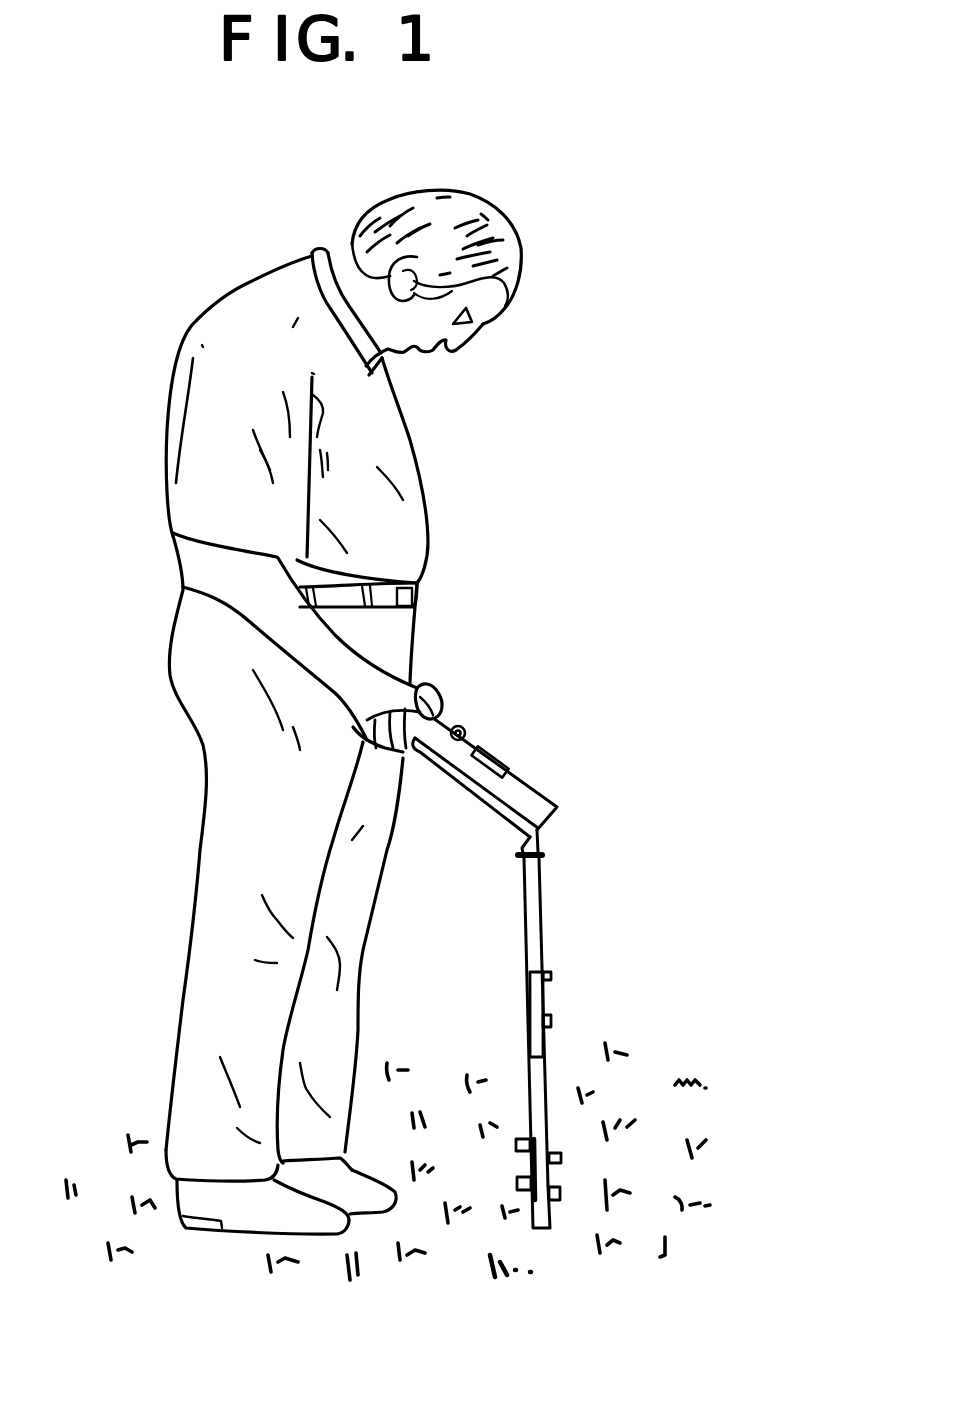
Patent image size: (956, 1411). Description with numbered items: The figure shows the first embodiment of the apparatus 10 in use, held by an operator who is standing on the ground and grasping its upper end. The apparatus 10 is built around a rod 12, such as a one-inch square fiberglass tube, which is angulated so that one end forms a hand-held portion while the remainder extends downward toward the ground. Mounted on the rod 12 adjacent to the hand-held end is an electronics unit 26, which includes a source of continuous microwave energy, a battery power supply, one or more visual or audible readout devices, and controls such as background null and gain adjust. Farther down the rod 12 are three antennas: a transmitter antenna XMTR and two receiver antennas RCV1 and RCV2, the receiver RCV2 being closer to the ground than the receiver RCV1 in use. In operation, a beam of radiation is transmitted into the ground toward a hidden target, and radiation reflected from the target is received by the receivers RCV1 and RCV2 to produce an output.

The apparatus 10 is at (589, 1029).
The rod 12 is at (532, 925).
The electronics unit 26 is at (522, 793).
The transmitter antenna XMTR is at (554, 1006).
The receiver antenna RCV1 is at (522, 1171).
The receiver antenna RCV2 is at (567, 1184).